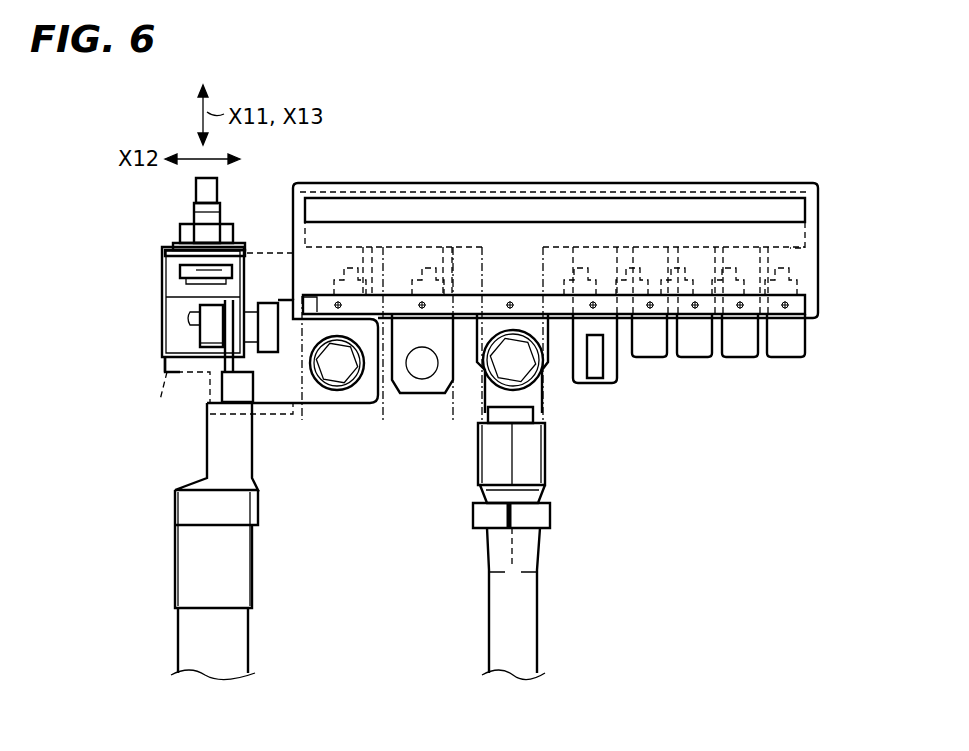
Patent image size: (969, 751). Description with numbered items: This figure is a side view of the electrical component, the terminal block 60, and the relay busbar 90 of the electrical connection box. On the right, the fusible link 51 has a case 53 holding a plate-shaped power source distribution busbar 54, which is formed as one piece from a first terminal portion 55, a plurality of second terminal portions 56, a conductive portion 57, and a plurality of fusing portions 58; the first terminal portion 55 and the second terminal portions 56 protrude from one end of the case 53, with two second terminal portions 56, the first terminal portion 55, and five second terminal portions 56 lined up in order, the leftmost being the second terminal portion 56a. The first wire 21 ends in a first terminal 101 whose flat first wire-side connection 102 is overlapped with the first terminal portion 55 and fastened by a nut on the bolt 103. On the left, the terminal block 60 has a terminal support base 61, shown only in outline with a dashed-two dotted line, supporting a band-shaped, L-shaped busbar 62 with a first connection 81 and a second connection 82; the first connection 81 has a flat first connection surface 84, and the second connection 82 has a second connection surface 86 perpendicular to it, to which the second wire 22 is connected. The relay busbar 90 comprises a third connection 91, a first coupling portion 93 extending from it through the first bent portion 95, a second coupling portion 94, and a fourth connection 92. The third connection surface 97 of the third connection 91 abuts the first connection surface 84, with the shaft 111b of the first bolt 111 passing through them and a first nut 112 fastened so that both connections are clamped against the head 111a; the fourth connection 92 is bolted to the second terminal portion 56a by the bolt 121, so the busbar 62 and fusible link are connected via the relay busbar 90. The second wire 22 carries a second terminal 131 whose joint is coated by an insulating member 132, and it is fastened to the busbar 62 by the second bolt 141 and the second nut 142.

The first wire 21 is at (537, 622).
The second wire 22 is at (248, 650).
The bus bar module 51 is at (763, 183).
The case 53 is at (812, 246).
The power source distribution busbar 54 is at (808, 230).
The first terminal portion 55 is at (540, 333).
The second terminal portions 56 is at (395, 392).
The second terminal portion 56a is at (380, 404).
The conductive portion 57 is at (556, 184).
The fusing portions 58 is at (838, 290).
The terminal block 60 is at (284, 417).
The terminal support base 61 is at (175, 392).
The busbar 62 is at (246, 262).
The first connection 81 is at (182, 262).
The second connection 82 is at (246, 358).
The first connection surface 84 is at (181, 236).
The second connection surface 86 is at (238, 344).
The relay busbar 90 is at (333, 405).
The third connection 91 is at (222, 232).
The fourth connection 92 is at (357, 398).
The first coupling portion 93 is at (165, 321).
The second coupling portion 94 is at (276, 253).
The first bent portion 95 is at (173, 246).
The third connection surface 97 is at (214, 268).
The first terminal 101 is at (548, 462).
The first wire-side connection 102 is at (407, 388).
The bolt 103 is at (513, 352).
The first bolt 111 is at (196, 191).
The head 111a is at (186, 281).
The shaft 111b is at (194, 215).
The first nut 112 is at (219, 212).
The bolt 121 is at (333, 378).
The second terminal 131 is at (188, 379).
The insulating member 132 is at (242, 568).
The second bolt 141 is at (200, 328).
The second nut 142 is at (314, 300).